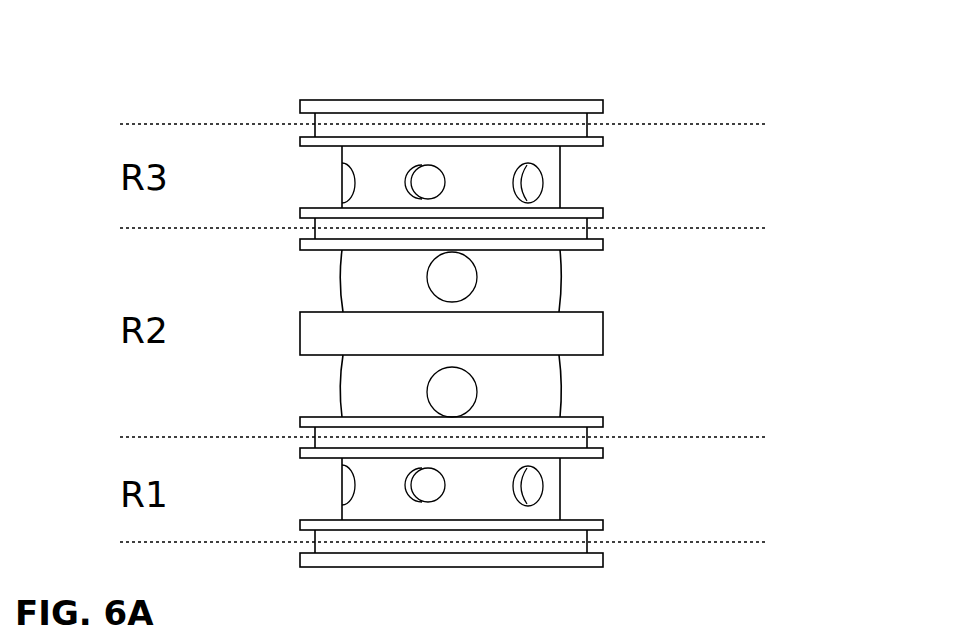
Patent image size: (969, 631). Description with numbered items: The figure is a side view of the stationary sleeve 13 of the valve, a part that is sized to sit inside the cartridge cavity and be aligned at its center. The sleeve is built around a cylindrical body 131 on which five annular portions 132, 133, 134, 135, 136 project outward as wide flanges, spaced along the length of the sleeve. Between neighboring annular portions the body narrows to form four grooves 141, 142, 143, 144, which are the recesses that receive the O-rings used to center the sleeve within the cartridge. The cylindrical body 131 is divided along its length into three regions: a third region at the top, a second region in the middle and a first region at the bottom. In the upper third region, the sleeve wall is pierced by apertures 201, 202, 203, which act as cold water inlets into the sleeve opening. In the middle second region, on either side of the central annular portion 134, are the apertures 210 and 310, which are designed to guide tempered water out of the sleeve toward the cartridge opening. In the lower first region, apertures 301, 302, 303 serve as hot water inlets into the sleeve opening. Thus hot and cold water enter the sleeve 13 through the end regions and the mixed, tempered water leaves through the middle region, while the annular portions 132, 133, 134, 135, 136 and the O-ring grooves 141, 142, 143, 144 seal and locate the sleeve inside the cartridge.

The stationary sleeve 13 is at (216, 82).
The cylindrical body 131 is at (318, 107).
The annular portion 132 is at (594, 142).
The annular portion 133 is at (594, 245).
The annular portion 134 is at (597, 345).
The annular portion 135 is at (597, 453).
The annular portion 136 is at (597, 560).
The groove 141 is at (304, 130).
The groove 142 is at (301, 237).
The groove 143 is at (301, 442).
The groove 144 is at (301, 547).
The aperture 201 is at (348, 183).
The aperture 202 is at (428, 182).
The aperture 203 is at (525, 185).
The aperture 210 is at (452, 277).
The aperture 310 is at (452, 392).
The aperture 301 is at (346, 487).
The aperture 302 is at (428, 485).
The aperture 303 is at (520, 487).